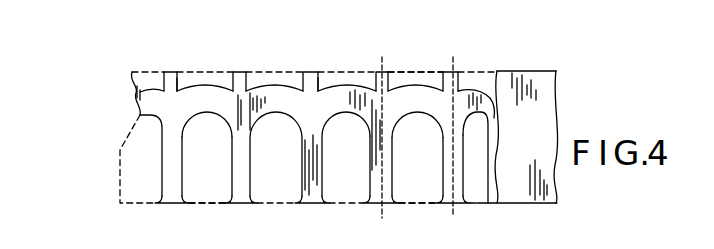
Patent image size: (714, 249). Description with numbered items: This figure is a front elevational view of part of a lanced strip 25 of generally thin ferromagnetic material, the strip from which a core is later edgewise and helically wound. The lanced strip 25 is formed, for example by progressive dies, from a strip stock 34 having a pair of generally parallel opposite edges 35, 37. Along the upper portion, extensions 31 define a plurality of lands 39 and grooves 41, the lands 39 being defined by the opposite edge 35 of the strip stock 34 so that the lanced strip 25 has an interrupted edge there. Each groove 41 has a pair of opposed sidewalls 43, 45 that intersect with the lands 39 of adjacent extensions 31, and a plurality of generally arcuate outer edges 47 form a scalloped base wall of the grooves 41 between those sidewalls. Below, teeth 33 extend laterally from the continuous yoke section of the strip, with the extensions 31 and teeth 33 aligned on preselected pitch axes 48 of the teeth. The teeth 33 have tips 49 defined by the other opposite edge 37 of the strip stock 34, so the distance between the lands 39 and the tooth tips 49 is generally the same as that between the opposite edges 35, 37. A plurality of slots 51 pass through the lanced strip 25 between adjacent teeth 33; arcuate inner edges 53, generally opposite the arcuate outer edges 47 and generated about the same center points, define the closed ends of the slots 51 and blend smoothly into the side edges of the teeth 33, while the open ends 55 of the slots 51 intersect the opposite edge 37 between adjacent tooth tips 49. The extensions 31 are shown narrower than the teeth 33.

The lanced strip 25 is at (110, 97).
The extensions 31 is at (465, 82).
The teeth 33 is at (168, 180).
The strip stock 34 is at (543, 100).
The opposite edge 35 is at (131, 71).
The opposite edge 37 is at (133, 205).
The lands 39 is at (164, 72).
The grooves 41 is at (210, 86).
The sidewall 43 is at (182, 78).
The sidewall 45 is at (225, 80).
The arcuate outer edges 47 is at (200, 96).
The pitch axes 48 is at (447, 62).
The tooth tips 49 is at (177, 207).
The slots 51 is at (200, 162).
The arcuate inner edges 53 is at (207, 115).
The open ends 55 is at (207, 205).